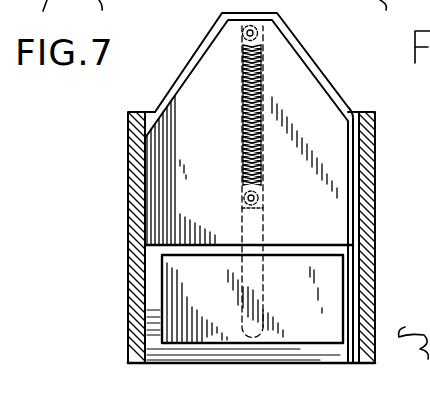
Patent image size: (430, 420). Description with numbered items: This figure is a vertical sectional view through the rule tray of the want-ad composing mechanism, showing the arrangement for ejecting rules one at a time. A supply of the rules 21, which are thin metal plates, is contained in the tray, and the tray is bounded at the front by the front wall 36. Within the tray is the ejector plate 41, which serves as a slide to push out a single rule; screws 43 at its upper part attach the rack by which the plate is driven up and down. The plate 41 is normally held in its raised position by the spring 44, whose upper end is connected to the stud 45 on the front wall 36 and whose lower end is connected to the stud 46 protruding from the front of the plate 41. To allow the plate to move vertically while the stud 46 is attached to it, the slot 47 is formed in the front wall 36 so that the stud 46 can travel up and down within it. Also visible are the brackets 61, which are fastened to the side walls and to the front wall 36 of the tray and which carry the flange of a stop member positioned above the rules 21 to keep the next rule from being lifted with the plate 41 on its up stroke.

The rules 21 is at (332, 279).
The front wall 36 is at (333, 97).
The ejector plate 41 is at (340, 199).
The screws 43 is at (245, 118).
The spring 44 is at (242, 149).
The stud 45 is at (258, 32).
The stud 46 is at (242, 192).
The slot 47 is at (263, 217).
The brackets 61 is at (129, 198).